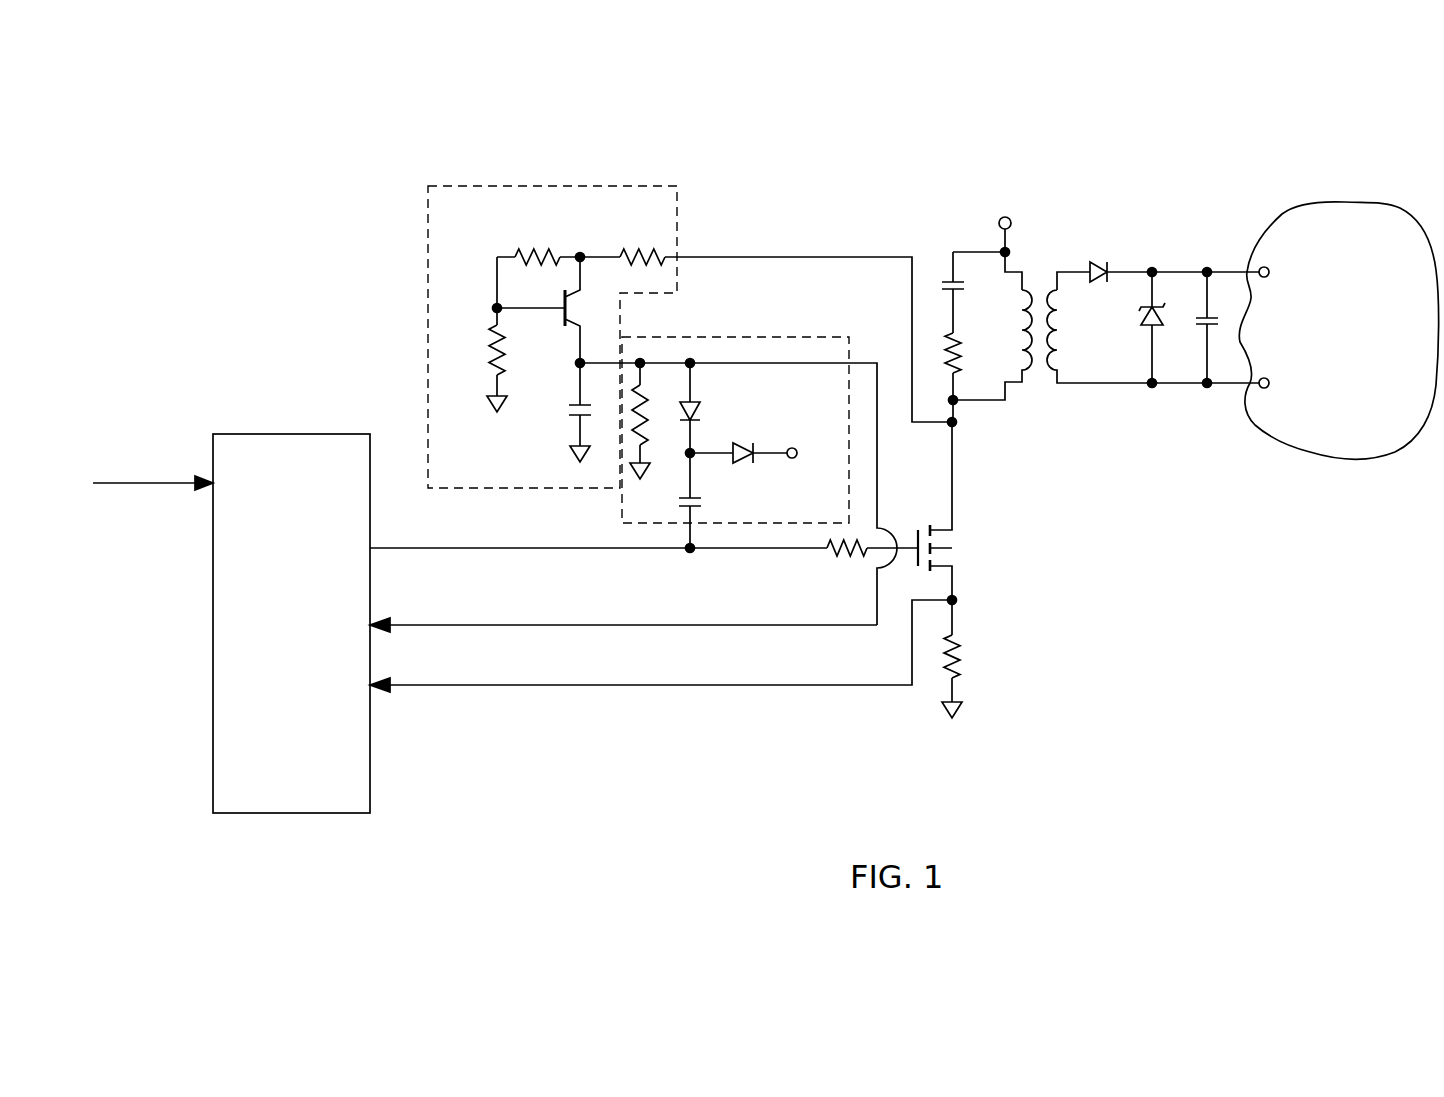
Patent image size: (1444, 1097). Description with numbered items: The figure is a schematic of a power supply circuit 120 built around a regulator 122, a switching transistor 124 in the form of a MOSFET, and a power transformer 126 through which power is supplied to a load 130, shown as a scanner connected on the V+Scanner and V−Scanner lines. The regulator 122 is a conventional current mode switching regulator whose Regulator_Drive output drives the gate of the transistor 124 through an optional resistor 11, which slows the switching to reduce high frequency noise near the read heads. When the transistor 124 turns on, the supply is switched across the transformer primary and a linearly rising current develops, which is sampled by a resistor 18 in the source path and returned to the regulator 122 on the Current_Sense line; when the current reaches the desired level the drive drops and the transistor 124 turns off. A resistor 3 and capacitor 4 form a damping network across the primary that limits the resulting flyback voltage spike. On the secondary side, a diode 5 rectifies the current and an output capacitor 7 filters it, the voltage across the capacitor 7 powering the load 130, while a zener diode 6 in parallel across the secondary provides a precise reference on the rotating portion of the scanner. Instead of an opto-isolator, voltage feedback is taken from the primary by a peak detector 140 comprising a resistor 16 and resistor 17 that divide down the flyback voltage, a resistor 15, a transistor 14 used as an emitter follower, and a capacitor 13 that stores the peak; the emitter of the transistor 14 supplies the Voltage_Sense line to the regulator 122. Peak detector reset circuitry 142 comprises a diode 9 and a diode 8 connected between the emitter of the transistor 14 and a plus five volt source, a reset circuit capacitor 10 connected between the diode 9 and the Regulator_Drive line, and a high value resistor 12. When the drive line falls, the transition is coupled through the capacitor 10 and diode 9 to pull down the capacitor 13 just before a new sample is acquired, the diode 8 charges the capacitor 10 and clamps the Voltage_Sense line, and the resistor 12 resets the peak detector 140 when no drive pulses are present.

The resistor 3 is at (963, 377).
The capacitor 4 is at (961, 292).
The diode 5 is at (1121, 260).
The zener diode 6 is at (1157, 327).
The output capacitor 7 is at (1214, 327).
The diode 8 is at (765, 464).
The diode 9 is at (699, 408).
The reset circuit capacitor 10 is at (702, 500).
The resistor 11 is at (840, 558).
The resistor 12 is at (650, 421).
The capacitor 13 is at (589, 412).
The transistor 14 is at (552, 310).
The resistor 15 is at (766, 324).
The resistor 16 is at (538, 246).
The resistor 17 is at (507, 360).
The resistor 18 is at (964, 659).
The power supply circuit 120 is at (1138, 665).
The regulator 122 is at (370, 784).
The switching transistor 124 is at (967, 553).
The power transformer 126 is at (1050, 232).
The load 130 is at (1262, 232).
The peak detector 140 is at (428, 293).
The peak detector reset circuitry 142 is at (750, 337).